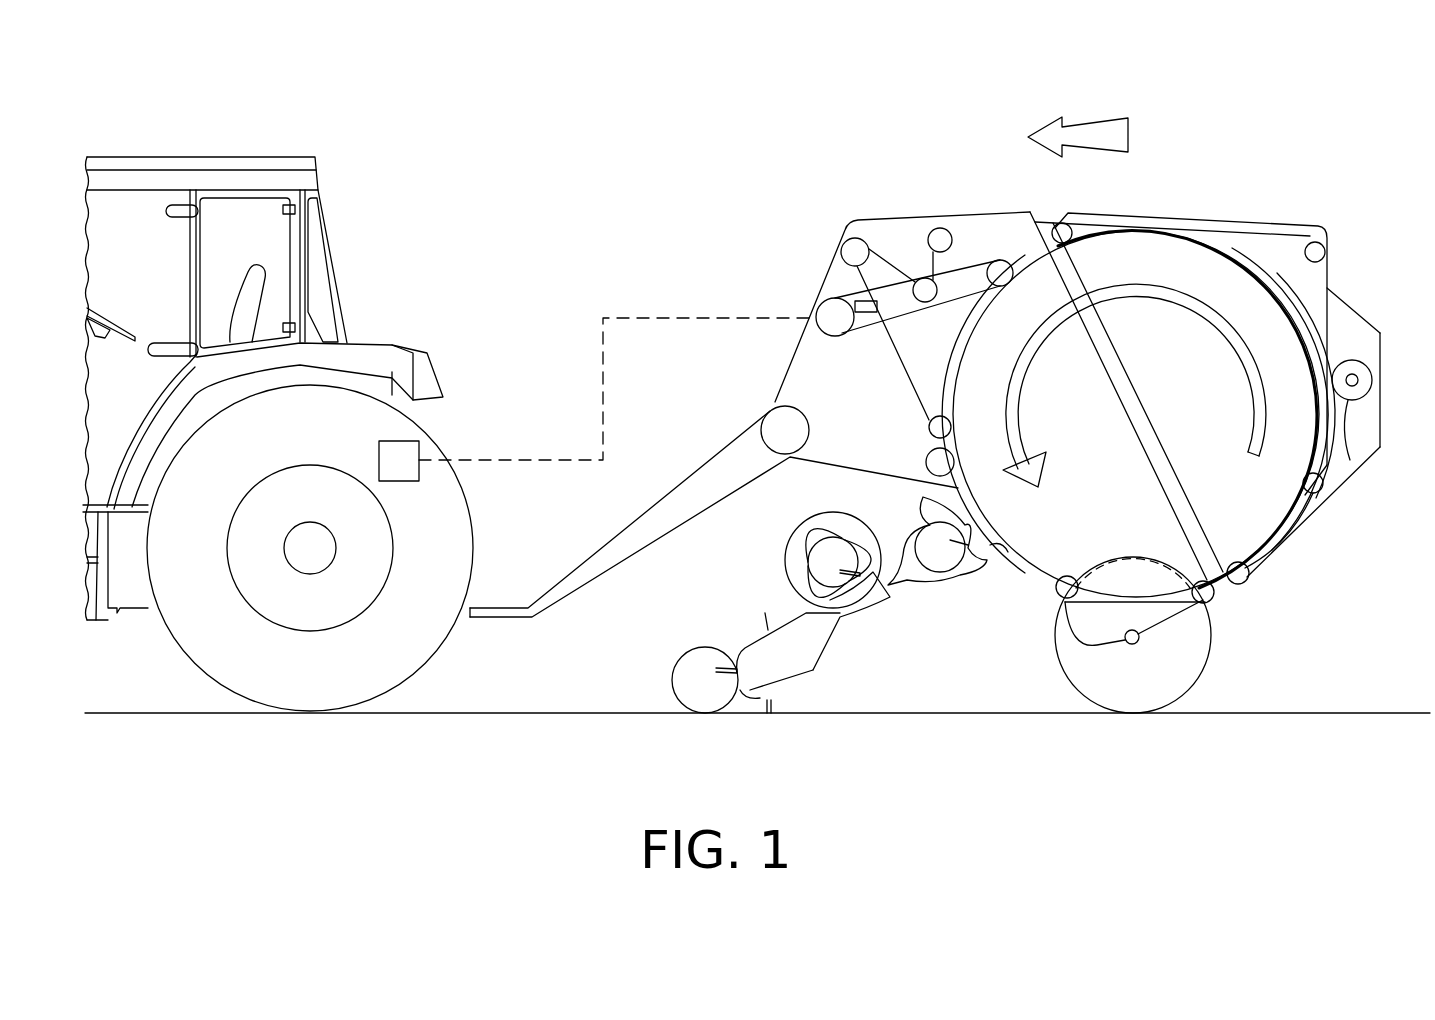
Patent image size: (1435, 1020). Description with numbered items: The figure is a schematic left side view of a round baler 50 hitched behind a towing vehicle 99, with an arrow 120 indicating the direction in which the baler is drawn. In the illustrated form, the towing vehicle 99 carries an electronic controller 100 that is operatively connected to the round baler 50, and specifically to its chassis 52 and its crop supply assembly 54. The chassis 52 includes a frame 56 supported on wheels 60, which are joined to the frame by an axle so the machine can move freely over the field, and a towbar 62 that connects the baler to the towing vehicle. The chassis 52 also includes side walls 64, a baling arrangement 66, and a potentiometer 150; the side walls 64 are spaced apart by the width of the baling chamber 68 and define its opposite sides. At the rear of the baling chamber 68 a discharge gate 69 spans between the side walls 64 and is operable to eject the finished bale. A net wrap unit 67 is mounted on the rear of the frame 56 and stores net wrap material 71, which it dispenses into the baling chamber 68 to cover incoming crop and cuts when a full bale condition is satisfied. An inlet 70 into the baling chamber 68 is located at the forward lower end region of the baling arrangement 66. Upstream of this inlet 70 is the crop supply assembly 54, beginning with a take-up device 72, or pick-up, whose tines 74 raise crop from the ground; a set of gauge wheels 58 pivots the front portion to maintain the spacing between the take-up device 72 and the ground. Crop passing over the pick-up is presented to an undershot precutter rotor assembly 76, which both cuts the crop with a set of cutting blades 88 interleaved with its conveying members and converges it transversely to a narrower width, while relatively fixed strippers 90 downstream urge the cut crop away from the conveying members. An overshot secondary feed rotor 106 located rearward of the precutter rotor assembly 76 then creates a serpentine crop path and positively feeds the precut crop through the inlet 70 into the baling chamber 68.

The towing vehicle 99 is at (372, 256).
The electronic controller 100 is at (378, 448).
The round baler 50 is at (868, 197).
The arrow 120 is at (1093, 118).
The potentiometer 150 is at (857, 300).
The frame 56 is at (808, 292).
The baling arrangement 66 is at (900, 380).
The side walls 64 is at (1270, 243).
The net wrap material 71 is at (1297, 277).
The discharge gate 69 is at (1327, 283).
The net wrap unit 67 is at (1382, 402).
The chassis 52 is at (1327, 537).
The wheels 60 is at (1198, 653).
The baling chamber 68 is at (1207, 406).
The inlet 70 is at (988, 547).
The secondary feed rotor 106 is at (940, 560).
The precutter rotor assembly 76 is at (827, 550).
The strippers 90 is at (850, 557).
The cutting blades 88 is at (877, 603).
The crop supply assembly 54 is at (742, 510).
The towbar 62 is at (587, 560).
The wheels 58 is at (675, 677).
The tines 74 is at (778, 702).
The take-up device 72 is at (757, 685).